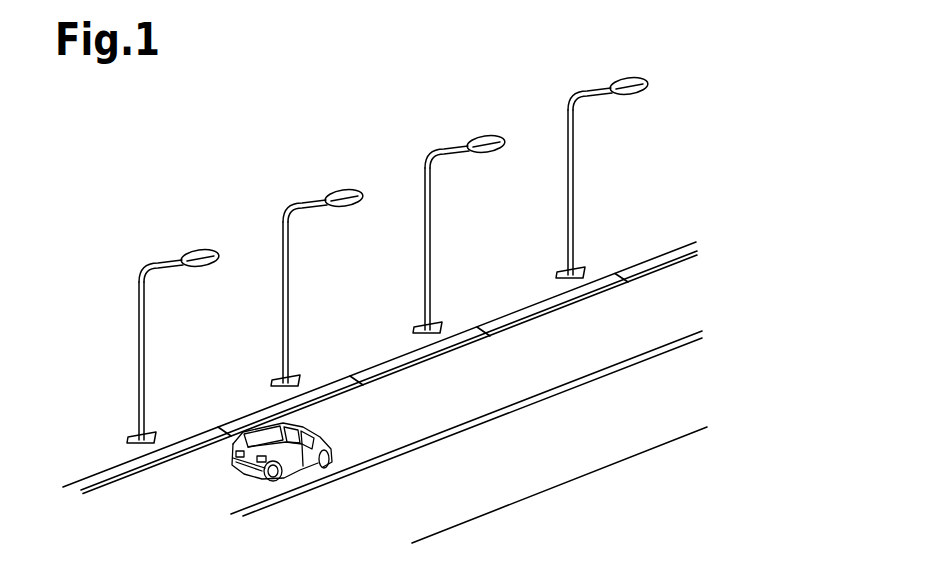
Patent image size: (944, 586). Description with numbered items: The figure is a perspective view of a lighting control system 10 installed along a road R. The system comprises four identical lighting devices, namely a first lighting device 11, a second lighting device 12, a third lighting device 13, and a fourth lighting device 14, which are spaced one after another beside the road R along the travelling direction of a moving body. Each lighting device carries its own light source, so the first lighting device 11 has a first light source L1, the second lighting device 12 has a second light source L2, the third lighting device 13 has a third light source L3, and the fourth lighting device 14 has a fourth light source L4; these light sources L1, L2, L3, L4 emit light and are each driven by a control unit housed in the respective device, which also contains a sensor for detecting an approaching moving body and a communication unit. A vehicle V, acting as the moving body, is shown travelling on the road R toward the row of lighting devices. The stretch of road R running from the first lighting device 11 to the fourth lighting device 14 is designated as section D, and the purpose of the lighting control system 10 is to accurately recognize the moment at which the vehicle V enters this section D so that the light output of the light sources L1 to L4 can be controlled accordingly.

The lighting control system 10 is at (237, 160).
The first lighting device 11 is at (145, 360).
The second lighting device 12 is at (288, 305).
The third lighting device 13 is at (431, 251).
The fourth lighting device 14 is at (574, 195).
The first light source L1 is at (204, 268).
The second light source L2 is at (349, 214).
The third light source L3 is at (492, 159).
The fourth light source L4 is at (635, 103).
The road R is at (503, 345).
The section D is at (453, 408).
The vehicle V is at (323, 434).